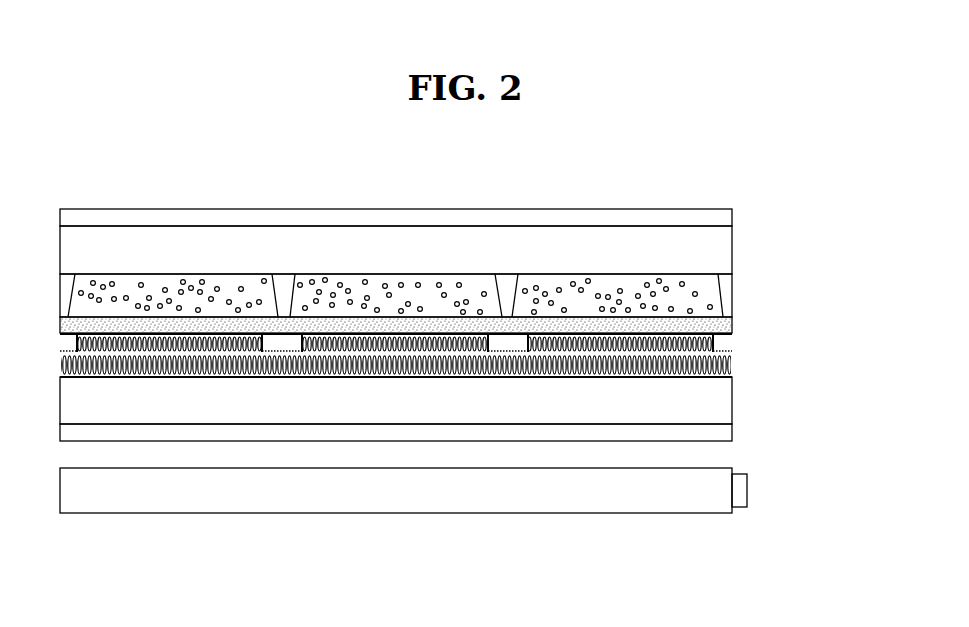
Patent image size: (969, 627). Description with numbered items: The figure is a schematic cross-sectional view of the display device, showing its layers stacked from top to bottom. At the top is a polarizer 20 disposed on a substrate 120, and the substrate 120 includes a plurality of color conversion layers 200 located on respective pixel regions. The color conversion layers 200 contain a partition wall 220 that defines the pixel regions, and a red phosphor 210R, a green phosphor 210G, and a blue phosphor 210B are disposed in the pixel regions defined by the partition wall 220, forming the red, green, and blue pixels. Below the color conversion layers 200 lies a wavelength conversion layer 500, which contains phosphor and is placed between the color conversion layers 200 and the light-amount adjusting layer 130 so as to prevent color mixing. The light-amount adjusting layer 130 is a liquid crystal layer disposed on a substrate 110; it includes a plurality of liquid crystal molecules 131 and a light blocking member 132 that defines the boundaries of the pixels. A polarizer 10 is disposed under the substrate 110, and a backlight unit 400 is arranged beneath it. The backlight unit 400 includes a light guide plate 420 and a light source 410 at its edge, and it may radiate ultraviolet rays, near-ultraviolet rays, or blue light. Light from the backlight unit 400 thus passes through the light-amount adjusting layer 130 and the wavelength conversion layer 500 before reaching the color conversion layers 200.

The polarizer 20 is at (715, 216).
The substrate 120 is at (715, 249).
The color conversion layers 200 is at (438, 239).
The red phosphor 210R is at (195, 290).
The green phosphor 210G is at (350, 290).
The blue phosphor 210B is at (595, 290).
The partition wall 220 is at (503, 290).
The wavelength conversion layer 500 is at (715, 323).
The light-amount adjusting layer 130 is at (468, 358).
The light blocking member 132 is at (718, 341).
The liquid crystal molecules 131 is at (718, 368).
The substrate 110 is at (715, 401).
The polarizer 10 is at (715, 433).
The backlight unit 400 is at (407, 540).
The light guide plate 420 is at (680, 503).
The light source 410 is at (738, 507).